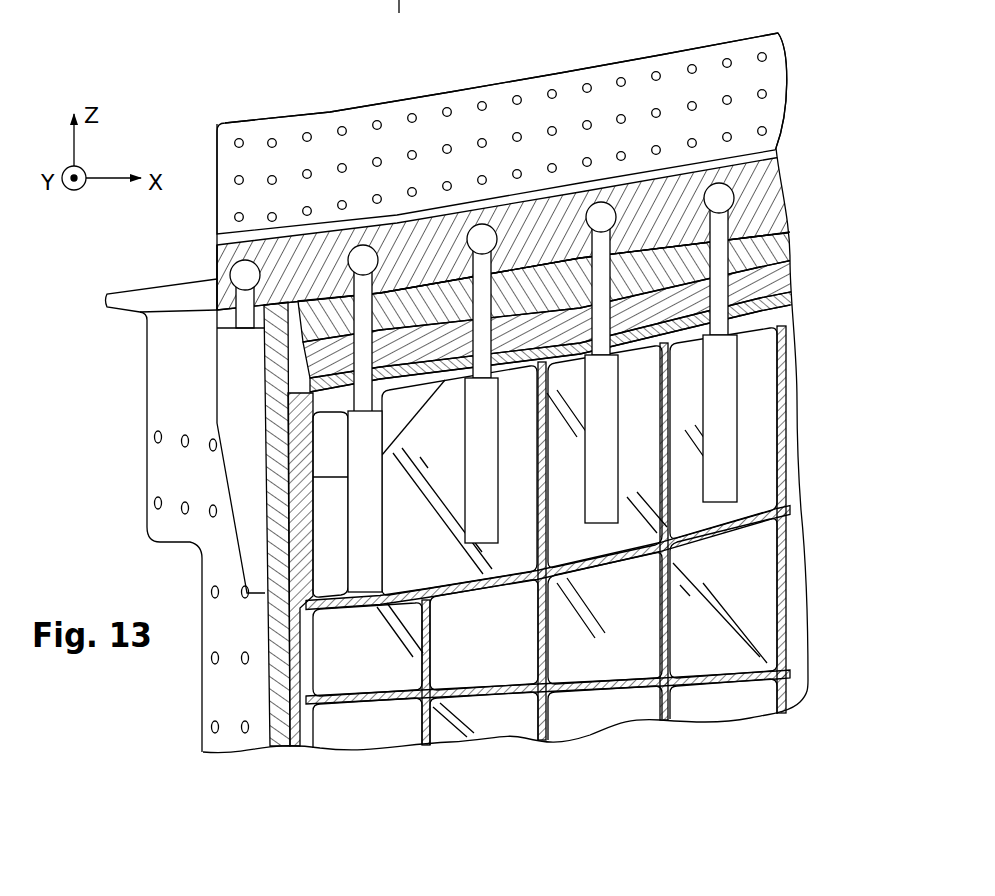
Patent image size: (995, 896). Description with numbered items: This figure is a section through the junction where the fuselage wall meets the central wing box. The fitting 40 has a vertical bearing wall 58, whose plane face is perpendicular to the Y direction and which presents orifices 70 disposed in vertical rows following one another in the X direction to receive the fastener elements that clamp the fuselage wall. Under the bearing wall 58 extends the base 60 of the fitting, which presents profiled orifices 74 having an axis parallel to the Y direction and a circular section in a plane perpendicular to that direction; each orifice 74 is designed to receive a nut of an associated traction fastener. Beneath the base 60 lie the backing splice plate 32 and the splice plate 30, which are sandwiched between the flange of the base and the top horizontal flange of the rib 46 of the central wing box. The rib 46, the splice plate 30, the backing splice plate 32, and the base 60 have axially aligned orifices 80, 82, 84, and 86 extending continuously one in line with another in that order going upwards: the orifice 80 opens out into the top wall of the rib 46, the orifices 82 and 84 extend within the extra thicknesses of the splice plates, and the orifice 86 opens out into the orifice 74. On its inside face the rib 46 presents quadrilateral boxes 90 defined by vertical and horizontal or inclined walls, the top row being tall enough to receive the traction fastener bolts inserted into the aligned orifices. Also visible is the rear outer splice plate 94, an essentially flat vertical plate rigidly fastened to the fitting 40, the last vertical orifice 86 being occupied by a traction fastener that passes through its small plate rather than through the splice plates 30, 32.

The fitting 40 is at (759, 75).
The vertical bearing wall 58 is at (710, 76).
The orifices 70 is at (314, 128).
The orifices 74 is at (604, 201).
The orifice 86 is at (733, 218).
The backing splice plate 32 is at (761, 221).
The orifice 84 is at (729, 254).
The splice plate 30 is at (763, 278).
The orifice 82 is at (730, 297).
The orifice 80 is at (730, 327).
The rib 46 is at (744, 592).
The boxes 90 is at (579, 522).
The base 60 is at (228, 257).
The rear outer splice plate 94 is at (170, 518).